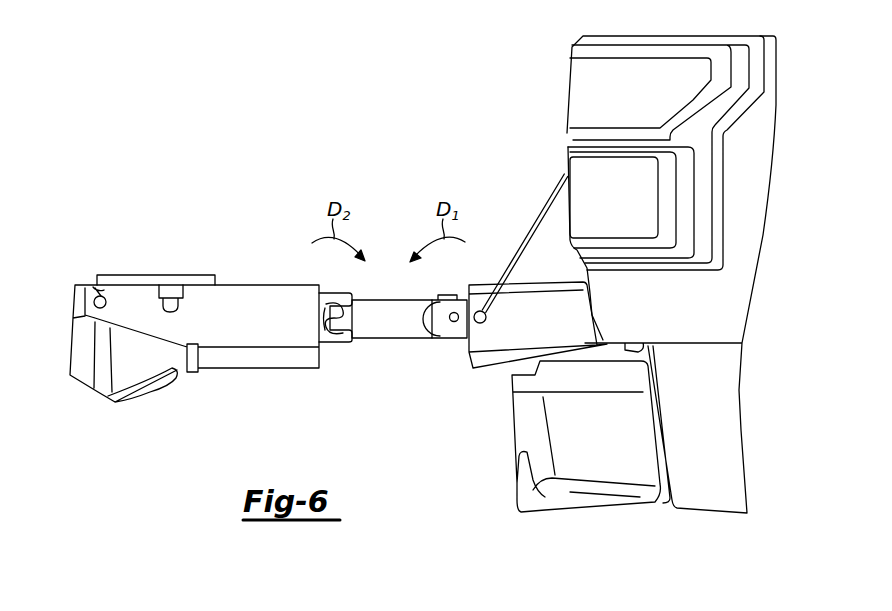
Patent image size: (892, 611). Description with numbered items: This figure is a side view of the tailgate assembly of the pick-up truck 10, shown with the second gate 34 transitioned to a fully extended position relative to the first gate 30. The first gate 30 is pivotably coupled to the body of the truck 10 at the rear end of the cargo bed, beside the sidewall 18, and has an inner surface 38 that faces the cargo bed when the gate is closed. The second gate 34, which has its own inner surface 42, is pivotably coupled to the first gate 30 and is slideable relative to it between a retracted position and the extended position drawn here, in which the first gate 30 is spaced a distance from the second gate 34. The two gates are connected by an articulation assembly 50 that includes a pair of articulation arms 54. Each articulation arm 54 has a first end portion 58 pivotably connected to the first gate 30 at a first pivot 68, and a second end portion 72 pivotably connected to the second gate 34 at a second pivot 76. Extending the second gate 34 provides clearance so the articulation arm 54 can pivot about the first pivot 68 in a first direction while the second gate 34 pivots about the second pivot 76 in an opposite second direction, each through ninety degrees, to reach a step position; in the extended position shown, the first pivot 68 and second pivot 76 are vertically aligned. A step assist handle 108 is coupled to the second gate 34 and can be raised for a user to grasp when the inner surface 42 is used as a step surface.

The pick-up truck 10 is at (712, 407).
The sidewall 18 is at (712, 302).
The first gate 30 is at (552, 322).
The second gate 34 is at (230, 337).
The inner surface 38 is at (547, 284).
The inner surface 42 is at (234, 277).
The articulation assembly 50 is at (393, 298).
The articulation arm 54 is at (397, 329).
The first end portion 58 is at (462, 348).
The first pivot 68 is at (452, 323).
The second end portion 72 is at (342, 351).
The second pivot 76 is at (340, 304).
The step assist handle 108 is at (115, 275).